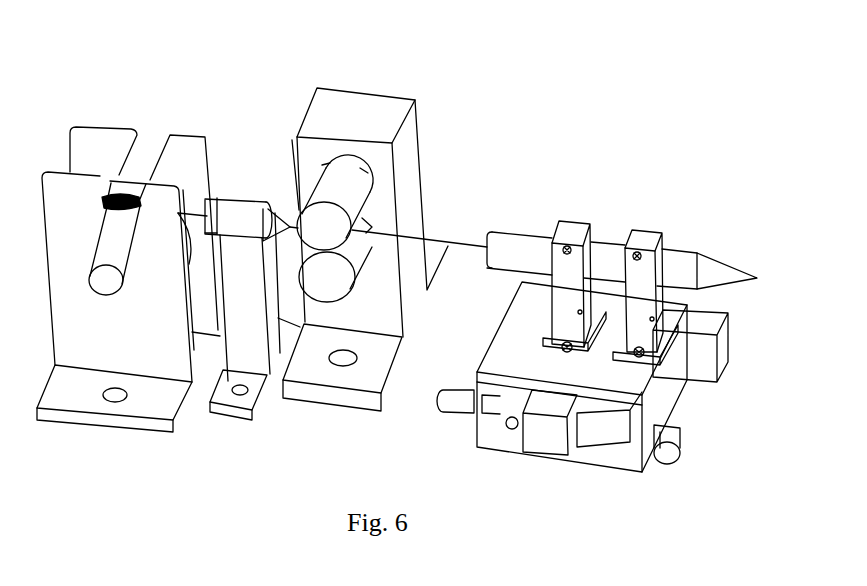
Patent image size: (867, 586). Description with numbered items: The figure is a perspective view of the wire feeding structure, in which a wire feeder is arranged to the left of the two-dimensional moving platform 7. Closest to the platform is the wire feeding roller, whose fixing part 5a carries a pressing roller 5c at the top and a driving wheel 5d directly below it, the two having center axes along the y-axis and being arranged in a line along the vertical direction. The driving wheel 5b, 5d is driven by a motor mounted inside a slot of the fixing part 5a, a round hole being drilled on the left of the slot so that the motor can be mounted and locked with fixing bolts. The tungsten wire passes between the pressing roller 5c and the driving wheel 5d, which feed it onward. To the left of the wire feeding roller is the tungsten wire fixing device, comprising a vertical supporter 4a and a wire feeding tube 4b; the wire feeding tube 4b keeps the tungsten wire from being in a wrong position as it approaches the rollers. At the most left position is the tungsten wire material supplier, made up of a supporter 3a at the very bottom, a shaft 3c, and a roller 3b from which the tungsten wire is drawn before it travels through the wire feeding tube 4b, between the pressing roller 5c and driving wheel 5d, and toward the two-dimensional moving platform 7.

The supporter 3a is at (97, 362).
The roller 3b is at (120, 183).
The shaft 3c is at (117, 260).
The vertical supporter 4a is at (247, 355).
The wire feeding tube 4b is at (212, 235).
The fixing part 5a is at (355, 327).
The driving wheel 5b is at (297, 195).
The pressing roller 5c is at (347, 190).
The driving wheel 5d is at (327, 277).
The 2-dimensional moving platform 7 is at (535, 328).